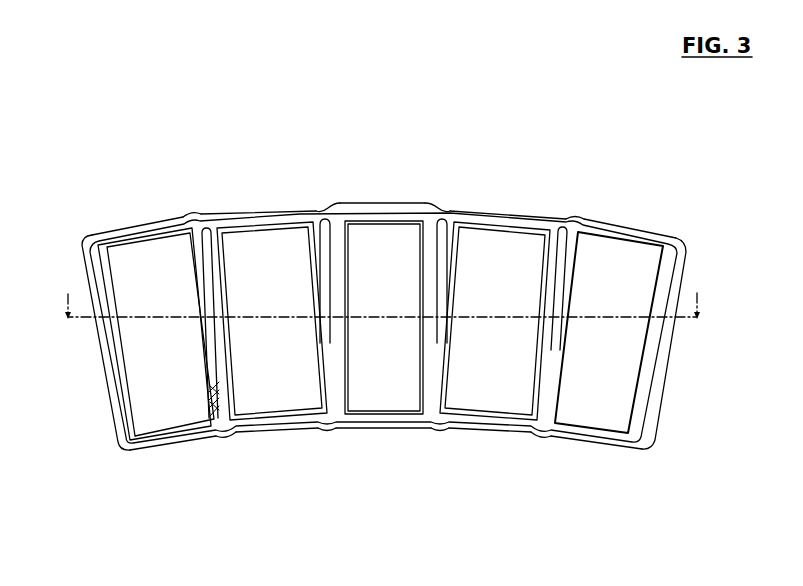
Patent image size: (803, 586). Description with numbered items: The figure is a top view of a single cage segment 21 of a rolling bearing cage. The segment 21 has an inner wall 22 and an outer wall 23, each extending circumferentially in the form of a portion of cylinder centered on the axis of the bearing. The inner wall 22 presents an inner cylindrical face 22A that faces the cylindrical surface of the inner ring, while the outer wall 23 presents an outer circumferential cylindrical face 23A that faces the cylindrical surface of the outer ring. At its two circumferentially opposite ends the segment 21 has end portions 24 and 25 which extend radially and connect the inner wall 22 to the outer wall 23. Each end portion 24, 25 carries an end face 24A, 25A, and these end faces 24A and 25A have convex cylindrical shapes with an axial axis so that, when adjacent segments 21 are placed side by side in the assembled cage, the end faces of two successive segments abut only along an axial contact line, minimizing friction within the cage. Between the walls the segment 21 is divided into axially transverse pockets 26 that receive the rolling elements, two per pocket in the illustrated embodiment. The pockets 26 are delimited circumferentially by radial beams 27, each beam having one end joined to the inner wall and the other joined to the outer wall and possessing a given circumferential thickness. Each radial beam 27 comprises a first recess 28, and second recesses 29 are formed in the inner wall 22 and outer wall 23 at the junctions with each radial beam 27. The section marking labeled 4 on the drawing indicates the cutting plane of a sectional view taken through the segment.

The segment 21 is at (303, 115).
The inner wall 22 is at (410, 424).
The inner cylindrical face 22A is at (488, 437).
The outer wall 23 is at (392, 215).
The outer circumferential cylindrical face 23A is at (358, 213).
The end portion 24 is at (113, 365).
The end face 24A is at (108, 393).
The end portion 25 is at (666, 285).
The end face 25A is at (667, 363).
The pocket 26 is at (147, 275).
The radial beam 27 is at (215, 422).
The first recess 28 is at (443, 214).
The second recess 29 is at (563, 225).
The section line 4- 4 is at (381, 304).